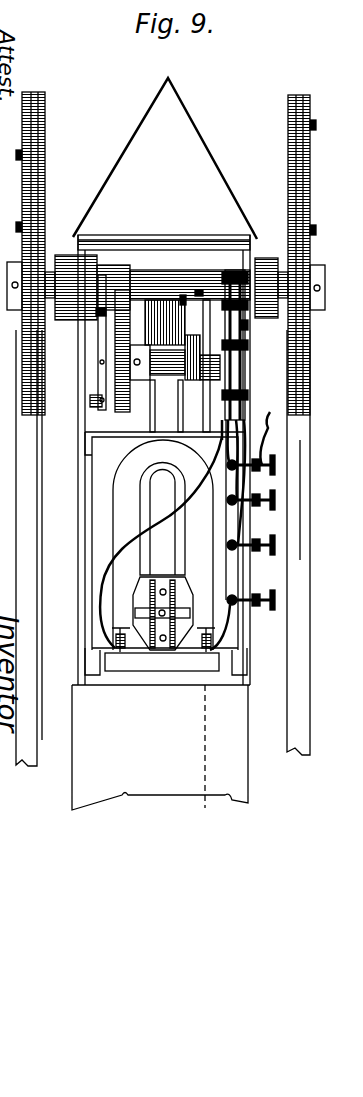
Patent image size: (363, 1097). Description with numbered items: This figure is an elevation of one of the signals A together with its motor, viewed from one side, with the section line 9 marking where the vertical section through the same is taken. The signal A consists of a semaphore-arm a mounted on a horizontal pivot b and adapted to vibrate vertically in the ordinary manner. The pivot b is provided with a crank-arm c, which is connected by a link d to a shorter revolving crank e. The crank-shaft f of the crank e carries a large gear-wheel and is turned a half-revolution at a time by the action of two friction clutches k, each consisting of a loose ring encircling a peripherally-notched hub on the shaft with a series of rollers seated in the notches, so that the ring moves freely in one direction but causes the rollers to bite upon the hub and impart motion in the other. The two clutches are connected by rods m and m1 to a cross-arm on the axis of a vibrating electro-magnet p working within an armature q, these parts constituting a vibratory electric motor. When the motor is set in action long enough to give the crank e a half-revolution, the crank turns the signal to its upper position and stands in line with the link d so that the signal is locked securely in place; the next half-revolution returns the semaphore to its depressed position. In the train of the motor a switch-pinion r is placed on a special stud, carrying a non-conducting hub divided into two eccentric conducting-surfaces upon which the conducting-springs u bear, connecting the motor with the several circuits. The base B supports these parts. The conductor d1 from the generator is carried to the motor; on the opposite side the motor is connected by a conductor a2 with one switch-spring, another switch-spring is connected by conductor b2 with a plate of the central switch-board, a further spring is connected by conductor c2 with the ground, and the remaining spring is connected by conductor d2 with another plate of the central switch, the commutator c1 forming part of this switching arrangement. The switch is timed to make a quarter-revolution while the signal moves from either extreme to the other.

The signal A is at (110, 132).
The base B is at (166, 623).
The section line 9 is at (210, 235).
The semaphore-arm a is at (166, 429).
The horizontal pivot b is at (166, 287).
The crank-arm c is at (100, 314).
The link d is at (96, 357).
The revolving crank e is at (103, 400).
The crank-shaft f is at (157, 362).
The friction clutch k is at (152, 332).
The rod m is at (166, 406).
The rod m1 is at (196, 366).
The vibrating electro-magnet p is at (180, 592).
The armature q is at (140, 590).
The switch-pinion r is at (183, 296).
The conducting-spring u is at (202, 328).
The conductor a2 is at (232, 364).
The conductor b2 is at (241, 388).
The commutator c1 is at (225, 402).
The conductor c2 is at (272, 484).
The conductor d1 is at (277, 625).
The conductor d2 is at (247, 327).